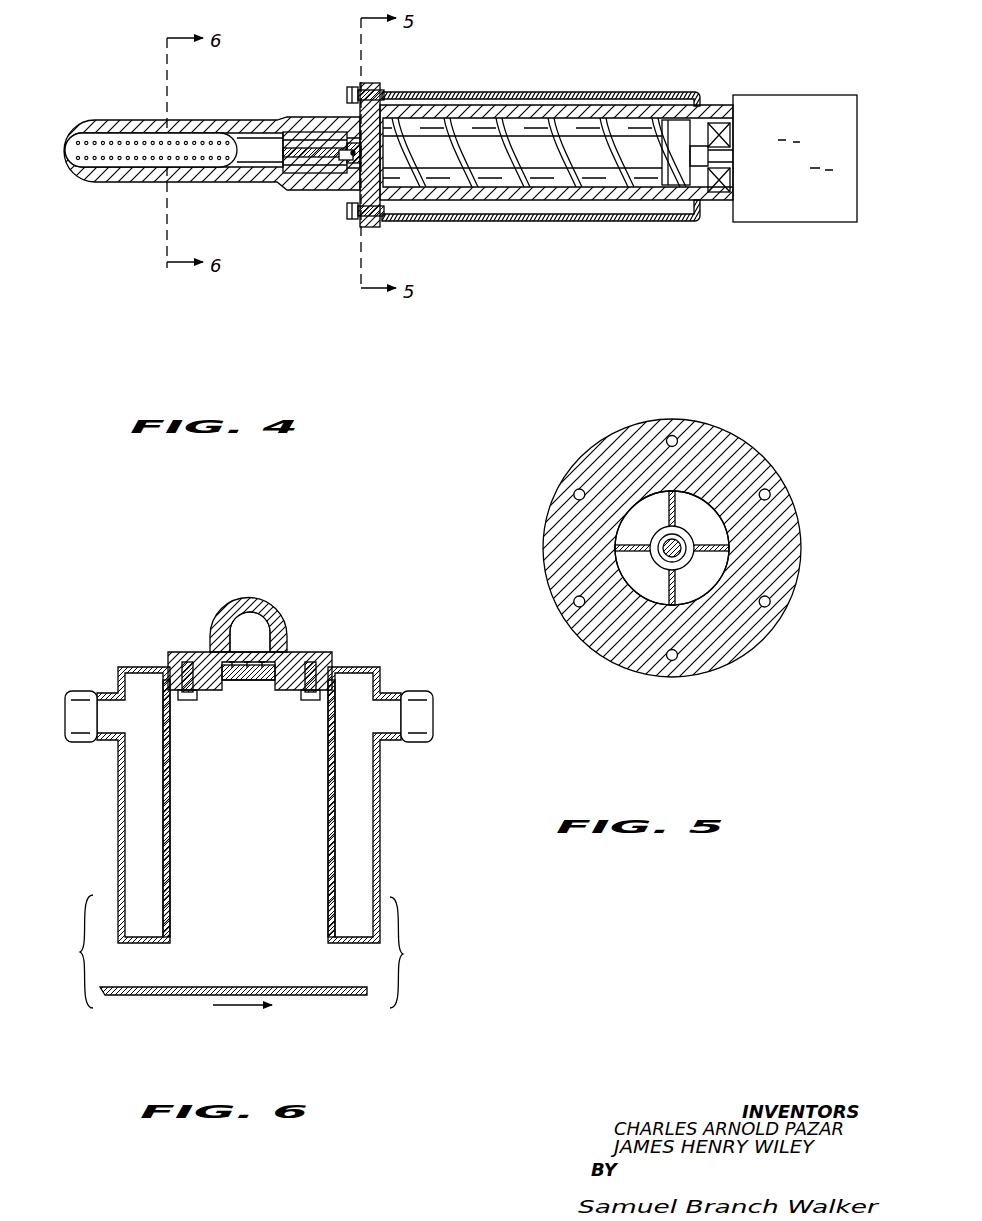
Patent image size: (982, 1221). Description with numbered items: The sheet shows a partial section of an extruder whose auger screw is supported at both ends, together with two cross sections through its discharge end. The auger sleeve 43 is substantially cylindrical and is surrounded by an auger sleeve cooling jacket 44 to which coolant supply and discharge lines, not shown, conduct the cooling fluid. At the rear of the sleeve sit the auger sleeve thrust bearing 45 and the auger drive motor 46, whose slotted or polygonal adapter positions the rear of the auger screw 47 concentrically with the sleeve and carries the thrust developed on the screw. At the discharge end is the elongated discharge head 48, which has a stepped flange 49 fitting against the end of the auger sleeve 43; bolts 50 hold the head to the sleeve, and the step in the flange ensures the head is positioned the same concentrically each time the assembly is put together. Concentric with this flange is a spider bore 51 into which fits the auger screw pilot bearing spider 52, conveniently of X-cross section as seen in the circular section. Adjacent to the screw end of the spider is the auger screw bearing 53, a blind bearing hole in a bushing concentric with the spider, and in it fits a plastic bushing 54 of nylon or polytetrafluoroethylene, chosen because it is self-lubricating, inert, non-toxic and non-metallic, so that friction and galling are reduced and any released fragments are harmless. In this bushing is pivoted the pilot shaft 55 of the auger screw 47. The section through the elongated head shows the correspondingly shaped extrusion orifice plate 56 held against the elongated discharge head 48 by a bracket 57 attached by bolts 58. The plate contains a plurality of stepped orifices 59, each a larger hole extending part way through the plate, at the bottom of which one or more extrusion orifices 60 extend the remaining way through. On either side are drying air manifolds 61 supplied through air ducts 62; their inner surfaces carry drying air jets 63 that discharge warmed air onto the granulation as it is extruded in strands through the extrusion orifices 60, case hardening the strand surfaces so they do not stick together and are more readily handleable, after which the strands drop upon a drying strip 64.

In FIG. 4, the auger sleeve 43 is at (521, 106).
In FIG. 4, the auger sleeve cooling jacket 44 is at (588, 92).
In FIG. 4, the auger sleeve thrust bearing 45 is at (717, 126).
In FIG. 4, the auger drive motor 46 is at (820, 110).
In FIG. 4, the auger screw 47 is at (454, 133).
In FIG. 4, the elongated discharge head 48 is at (186, 121).
In FIG. 6, the elongated discharge head 48 is at (248, 602).
In FIG. 4, the stepped flange 49 is at (366, 88).
In FIG. 5, the stepped flange 49 is at (546, 523).
In FIG. 4, the bolts 50 is at (352, 86).
In FIG. 4, the spider bore 51 is at (288, 184).
In FIG. 5, the spider bore 51 is at (727, 535).
In FIG. 4, the auger screw pilot bearing spider 52 is at (310, 158).
In FIG. 5, the auger screw pilot bearing spider 52 is at (678, 500).
In FIG. 4, the auger screw bearing 53 is at (349, 163).
In FIG. 5, the auger screw bearing 53 is at (660, 528).
In FIG. 4, the plastic bushing 54 is at (350, 161).
In FIG. 5, the plastic bushing 54 is at (659, 552).
In FIG. 4, the pilot shaft 55 is at (352, 138).
In FIG. 5, the pilot shaft 55 is at (664, 560).
In FIG. 4, the extrusion orifice plate 56 is at (92, 166).
In FIG. 6, the extrusion orifice plate 56 is at (267, 643).
In FIG. 6, the bracket 57 is at (283, 690).
In FIG. 6, the bolts 58 is at (187, 701).
In FIG. 6, the stepped orifices 59 is at (232, 648).
In FIG. 4, the extrusion orifices 60 is at (90, 143).
In FIG. 6, the extrusion orifices 60 is at (250, 681).
In FIG. 6, the drying air manifolds 61 is at (140, 667).
In FIG. 6, the air ducts 62 is at (77, 692).
In FIG. 6, the drying air jets 63 is at (169, 882).
In FIG. 6, the drying strip 64 is at (317, 989).